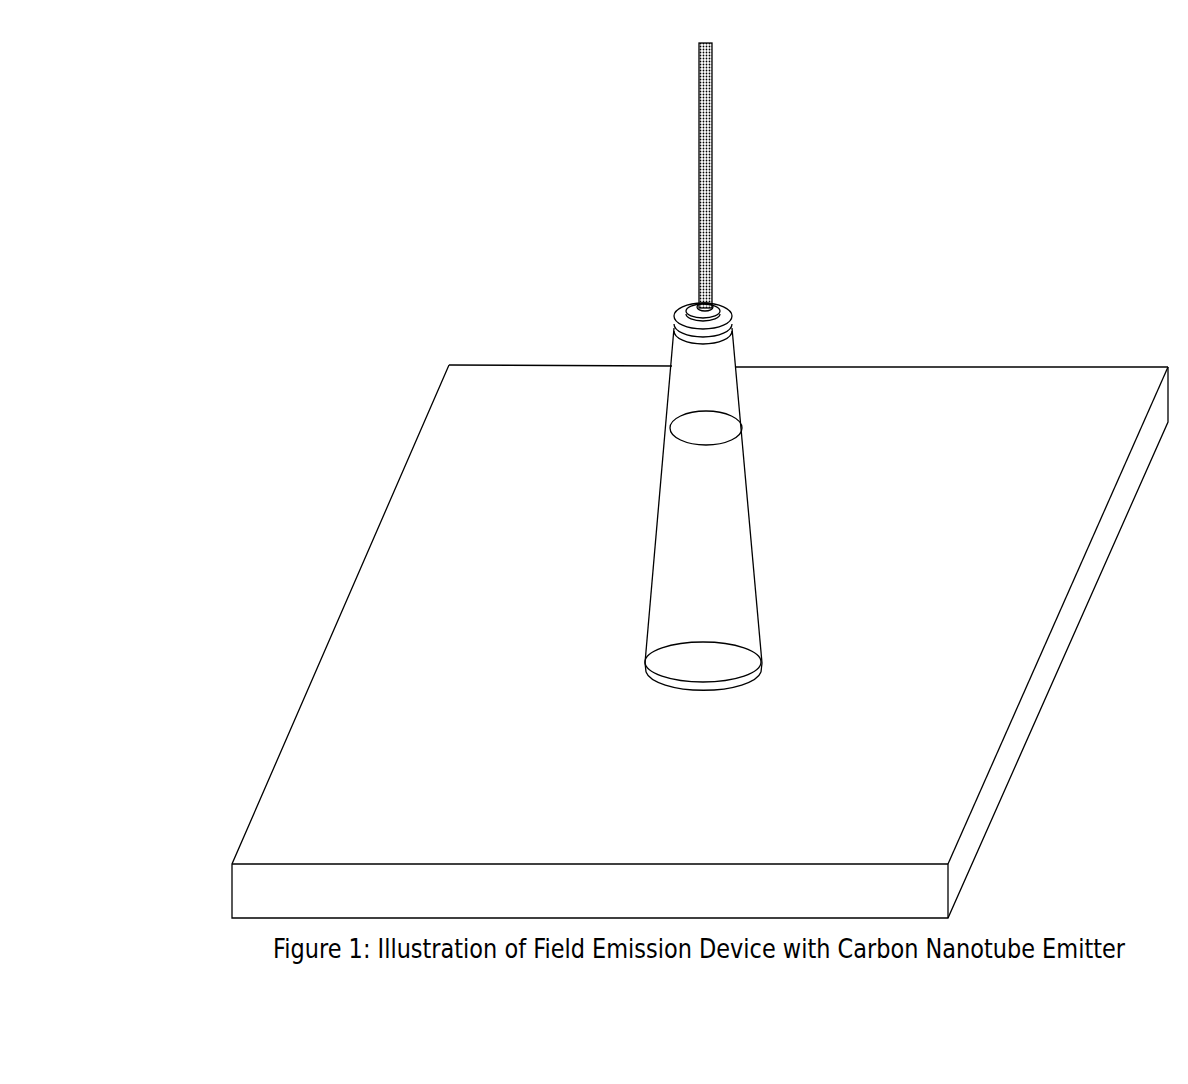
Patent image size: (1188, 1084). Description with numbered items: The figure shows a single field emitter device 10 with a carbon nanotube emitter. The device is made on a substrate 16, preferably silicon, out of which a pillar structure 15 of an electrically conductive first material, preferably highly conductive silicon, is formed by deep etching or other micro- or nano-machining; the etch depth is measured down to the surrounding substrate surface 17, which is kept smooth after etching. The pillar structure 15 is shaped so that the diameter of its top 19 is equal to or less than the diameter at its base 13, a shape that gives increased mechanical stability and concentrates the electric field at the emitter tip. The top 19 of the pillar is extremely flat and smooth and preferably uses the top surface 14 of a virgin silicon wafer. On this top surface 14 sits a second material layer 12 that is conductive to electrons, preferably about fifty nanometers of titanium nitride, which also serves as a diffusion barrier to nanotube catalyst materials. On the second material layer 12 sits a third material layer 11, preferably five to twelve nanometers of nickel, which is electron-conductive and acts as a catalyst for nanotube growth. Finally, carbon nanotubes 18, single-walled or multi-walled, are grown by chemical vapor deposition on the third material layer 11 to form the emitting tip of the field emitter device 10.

The field emitter device 10 is at (801, 268).
The third material layer 11 is at (695, 289).
The second material layer 12 is at (676, 291).
The base of pillar structure 13 is at (788, 665).
The top surface of pillar structure 14 is at (737, 297).
The pillar structure 15 is at (667, 402).
The substrate 16 is at (306, 860).
The substrate surface 17 is at (525, 589).
The carbon nanotubes 18 is at (679, 143).
The top of pillar structure 19 is at (758, 316).